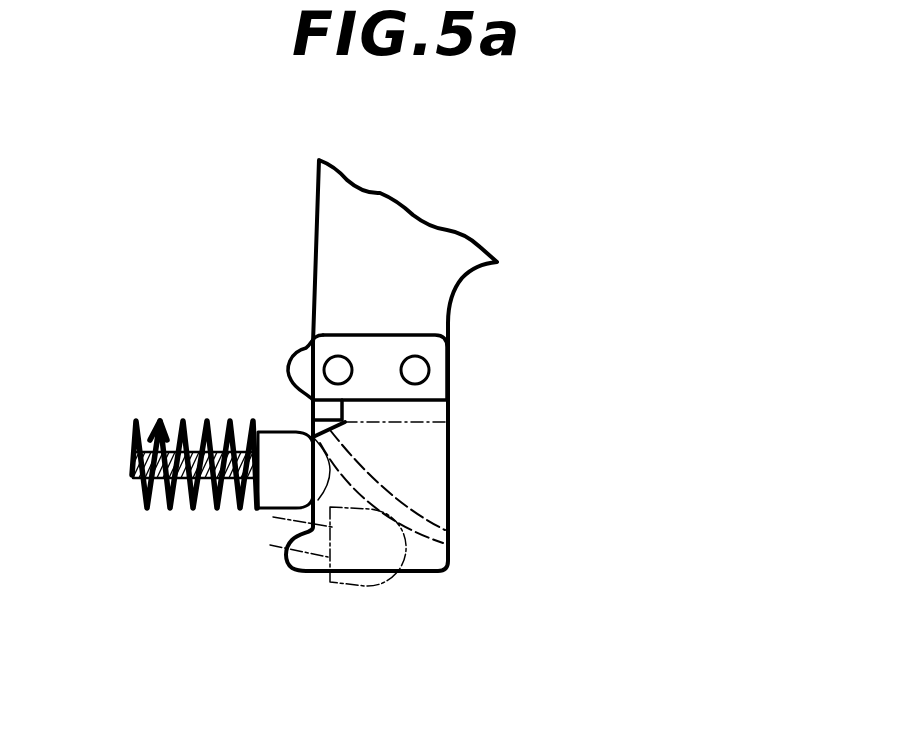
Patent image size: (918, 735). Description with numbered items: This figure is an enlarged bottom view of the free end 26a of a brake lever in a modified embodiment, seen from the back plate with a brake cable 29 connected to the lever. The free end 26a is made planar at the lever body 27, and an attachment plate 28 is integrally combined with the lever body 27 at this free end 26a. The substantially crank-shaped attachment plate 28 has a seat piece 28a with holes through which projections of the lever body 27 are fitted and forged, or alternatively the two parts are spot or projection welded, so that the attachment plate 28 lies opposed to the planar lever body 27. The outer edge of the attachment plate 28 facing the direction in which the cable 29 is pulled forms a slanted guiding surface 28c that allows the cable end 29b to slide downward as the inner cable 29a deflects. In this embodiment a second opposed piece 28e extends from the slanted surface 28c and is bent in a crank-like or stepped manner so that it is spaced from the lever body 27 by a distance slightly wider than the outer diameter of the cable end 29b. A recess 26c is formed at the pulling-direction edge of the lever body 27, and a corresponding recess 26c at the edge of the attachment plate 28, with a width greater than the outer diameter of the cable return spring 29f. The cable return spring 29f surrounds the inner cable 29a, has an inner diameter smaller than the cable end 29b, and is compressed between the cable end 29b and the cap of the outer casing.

The free end 26a is at (295, 250).
The recess 26c is at (305, 410).
The lever body 27 is at (450, 260).
The attachment plate 28 is at (450, 417).
The seat piece 28a is at (435, 390).
The slanted guiding surface 28c is at (423, 540).
The second opposed piece 28e is at (327, 520).
The brake cable 29 is at (193, 511).
The inner cable 29a is at (133, 478).
The cable end 29b is at (283, 443).
The cable return spring 29f is at (157, 420).